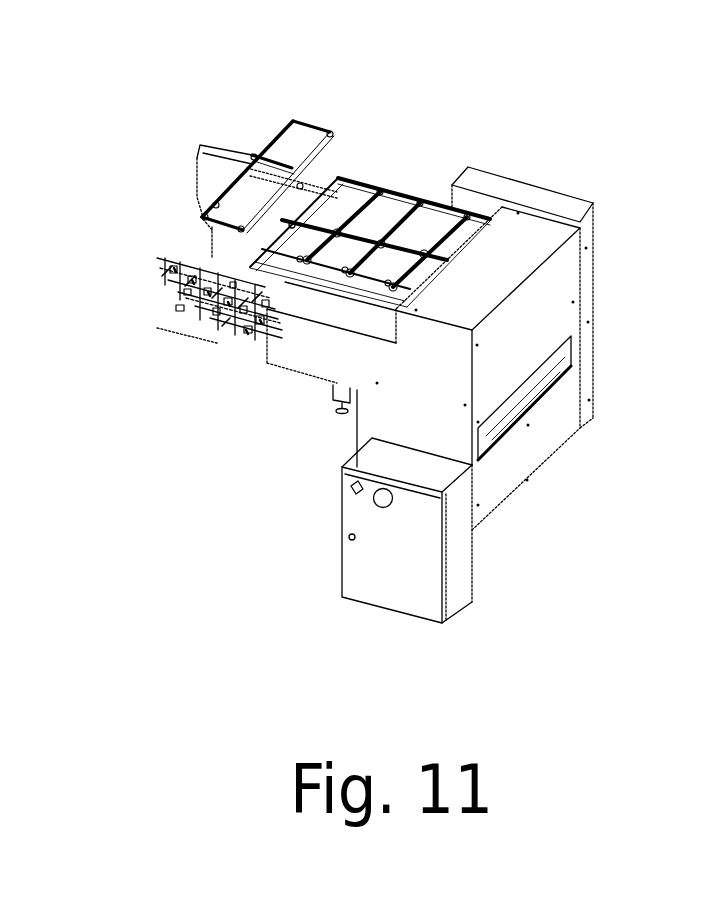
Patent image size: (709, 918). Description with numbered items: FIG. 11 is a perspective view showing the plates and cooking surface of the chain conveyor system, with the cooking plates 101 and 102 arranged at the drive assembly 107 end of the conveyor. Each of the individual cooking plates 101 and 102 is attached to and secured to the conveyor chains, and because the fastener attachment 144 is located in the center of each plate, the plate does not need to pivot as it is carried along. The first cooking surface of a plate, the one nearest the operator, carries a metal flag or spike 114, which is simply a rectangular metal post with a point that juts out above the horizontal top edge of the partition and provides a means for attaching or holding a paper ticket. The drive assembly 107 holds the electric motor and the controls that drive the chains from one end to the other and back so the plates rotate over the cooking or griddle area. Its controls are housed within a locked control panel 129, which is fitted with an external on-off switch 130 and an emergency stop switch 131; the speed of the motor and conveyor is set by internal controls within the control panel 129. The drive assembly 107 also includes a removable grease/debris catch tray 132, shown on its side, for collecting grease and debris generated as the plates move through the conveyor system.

The cooking plate 101 is at (300, 138).
The cooking plate 102 is at (352, 180).
The drive assembly 107 is at (580, 200).
The flag or spike 114 is at (303, 323).
The control panel 129 is at (475, 602).
The on-off switch 130 is at (330, 509).
The emergency stop switch 131 is at (395, 536).
The grease/debris catch tray 132 is at (547, 409).
The fastener attachment 144 is at (269, 242).